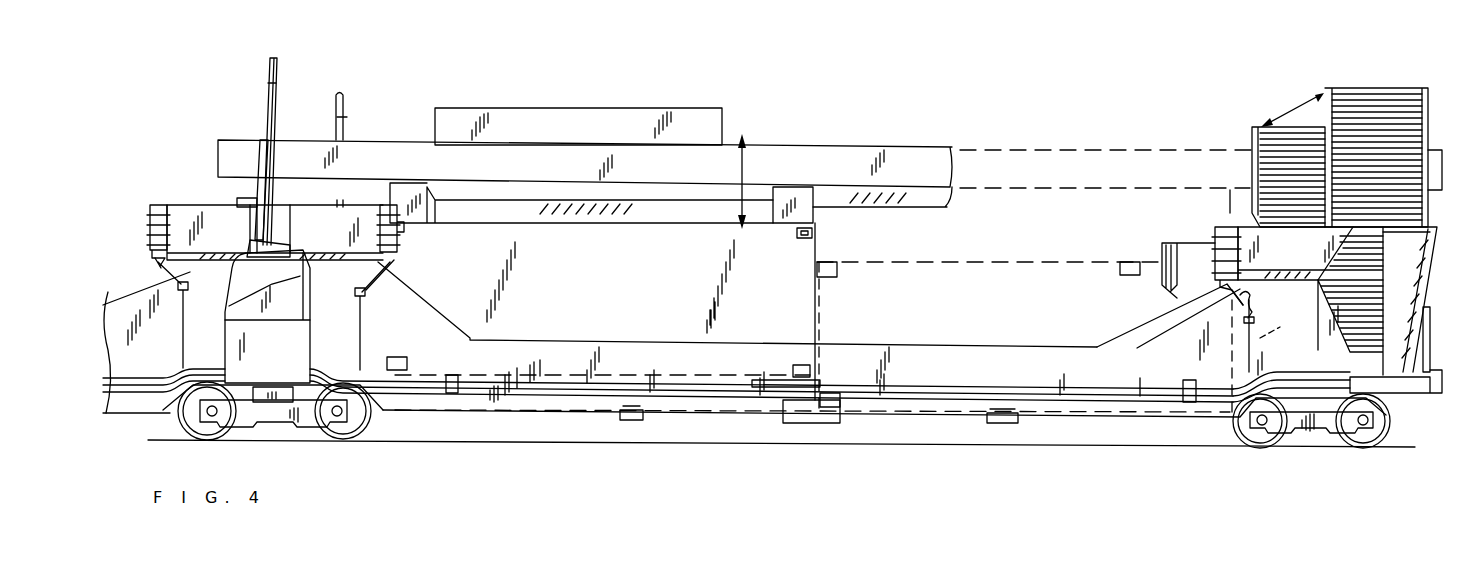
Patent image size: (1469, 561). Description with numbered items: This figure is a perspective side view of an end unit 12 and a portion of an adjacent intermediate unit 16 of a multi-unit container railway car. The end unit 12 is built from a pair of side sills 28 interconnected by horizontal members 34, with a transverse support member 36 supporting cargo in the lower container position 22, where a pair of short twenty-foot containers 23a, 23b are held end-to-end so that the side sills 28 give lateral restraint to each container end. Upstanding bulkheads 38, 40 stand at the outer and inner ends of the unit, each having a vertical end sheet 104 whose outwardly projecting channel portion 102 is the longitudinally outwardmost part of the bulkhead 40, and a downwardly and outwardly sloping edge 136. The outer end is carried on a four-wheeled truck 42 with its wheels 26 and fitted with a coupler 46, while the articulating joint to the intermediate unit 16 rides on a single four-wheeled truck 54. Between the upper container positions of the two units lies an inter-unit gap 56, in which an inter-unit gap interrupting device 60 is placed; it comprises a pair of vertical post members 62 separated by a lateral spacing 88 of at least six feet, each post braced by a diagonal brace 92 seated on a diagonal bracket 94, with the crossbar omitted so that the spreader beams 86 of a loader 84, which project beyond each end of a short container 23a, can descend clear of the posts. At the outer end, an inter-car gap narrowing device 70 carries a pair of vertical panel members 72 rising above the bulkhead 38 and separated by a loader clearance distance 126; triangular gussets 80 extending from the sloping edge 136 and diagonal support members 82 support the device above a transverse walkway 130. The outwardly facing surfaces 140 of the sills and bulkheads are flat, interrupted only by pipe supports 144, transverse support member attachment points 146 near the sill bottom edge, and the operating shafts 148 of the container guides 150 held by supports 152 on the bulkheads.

The end unit 12 is at (1093, 210).
The intermediate unit 16 is at (105, 288).
The lower container position 22 is at (1276, 334).
The short container 23a is at (650, 303).
The short container 23b is at (1026, 272).
The wheels 26 is at (1233, 430).
The side sill 28 is at (508, 412).
The horizontal member 34 is at (635, 421).
The transverse support member 36 is at (810, 424).
The bulkhead structure 38 is at (1185, 338).
The bulkhead structure 40 is at (190, 272).
The four-wheeled truck 42 is at (1318, 434).
The coupler 46 is at (1443, 375).
The four-wheeled truck 54 is at (290, 418).
The inter-unit gap 56 is at (290, 296).
The inter-unit gap interrupting device 60 is at (350, 98).
The vertical post member 62 is at (270, 84).
The inter-car gap narrowing device 70 is at (1349, 82).
The vertical panel member 72 is at (1383, 105).
The triangular vertical gusset 80 is at (1325, 245).
The diagonal support member 82 is at (1421, 291).
The loader 84 is at (713, 120).
The spreader beam 86 is at (898, 158).
The lateral spacing 88 is at (334, 99).
The diagonal brace 92 is at (263, 165).
The diagonal bracket 94 is at (238, 203).
The outwardmost portion of the bulkhead 102 is at (280, 208).
The vertical end sheet 104 is at (283, 222).
The loader clearance distance 126 is at (1266, 122).
The transverse walkway 130 is at (1412, 340).
The sloping edge of the bulkhead 136 is at (1412, 265).
The outwardly facing surface 140 is at (783, 363).
The pipe support 144 is at (450, 378).
The transverse support member attachment point 146 is at (637, 408).
The operating shaft 148 is at (366, 331).
The container guide 150 is at (150, 212).
The support 152 is at (1241, 300).